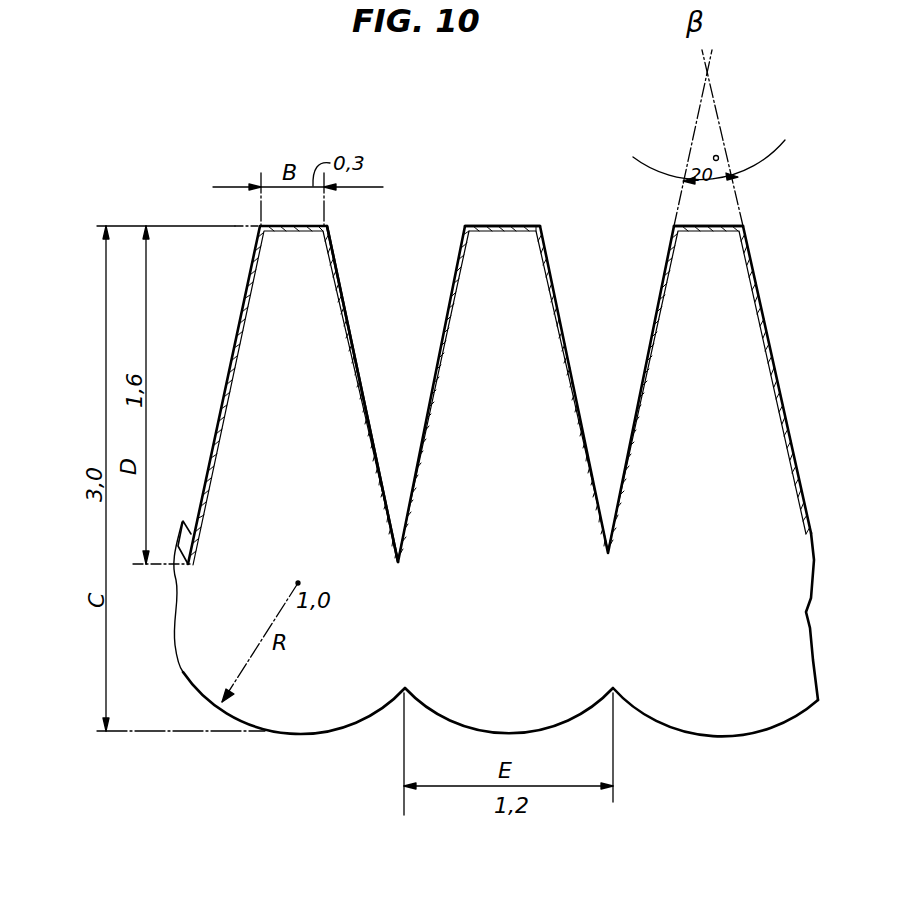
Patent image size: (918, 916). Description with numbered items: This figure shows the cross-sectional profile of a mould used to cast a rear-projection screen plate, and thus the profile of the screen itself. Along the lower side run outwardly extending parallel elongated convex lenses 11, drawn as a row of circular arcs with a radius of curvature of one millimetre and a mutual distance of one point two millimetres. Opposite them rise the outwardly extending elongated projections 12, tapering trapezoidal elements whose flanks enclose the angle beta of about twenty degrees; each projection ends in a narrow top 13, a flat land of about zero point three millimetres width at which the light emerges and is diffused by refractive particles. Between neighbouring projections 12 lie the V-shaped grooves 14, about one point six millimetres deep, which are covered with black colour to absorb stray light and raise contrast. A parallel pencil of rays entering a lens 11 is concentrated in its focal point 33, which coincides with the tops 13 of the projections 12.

The convex lens 11 is at (298, 733).
The projection 12 is at (320, 353).
The projection top 13 is at (716, 225).
The groove 14 is at (339, 277).
The focal point 33 is at (515, 226).